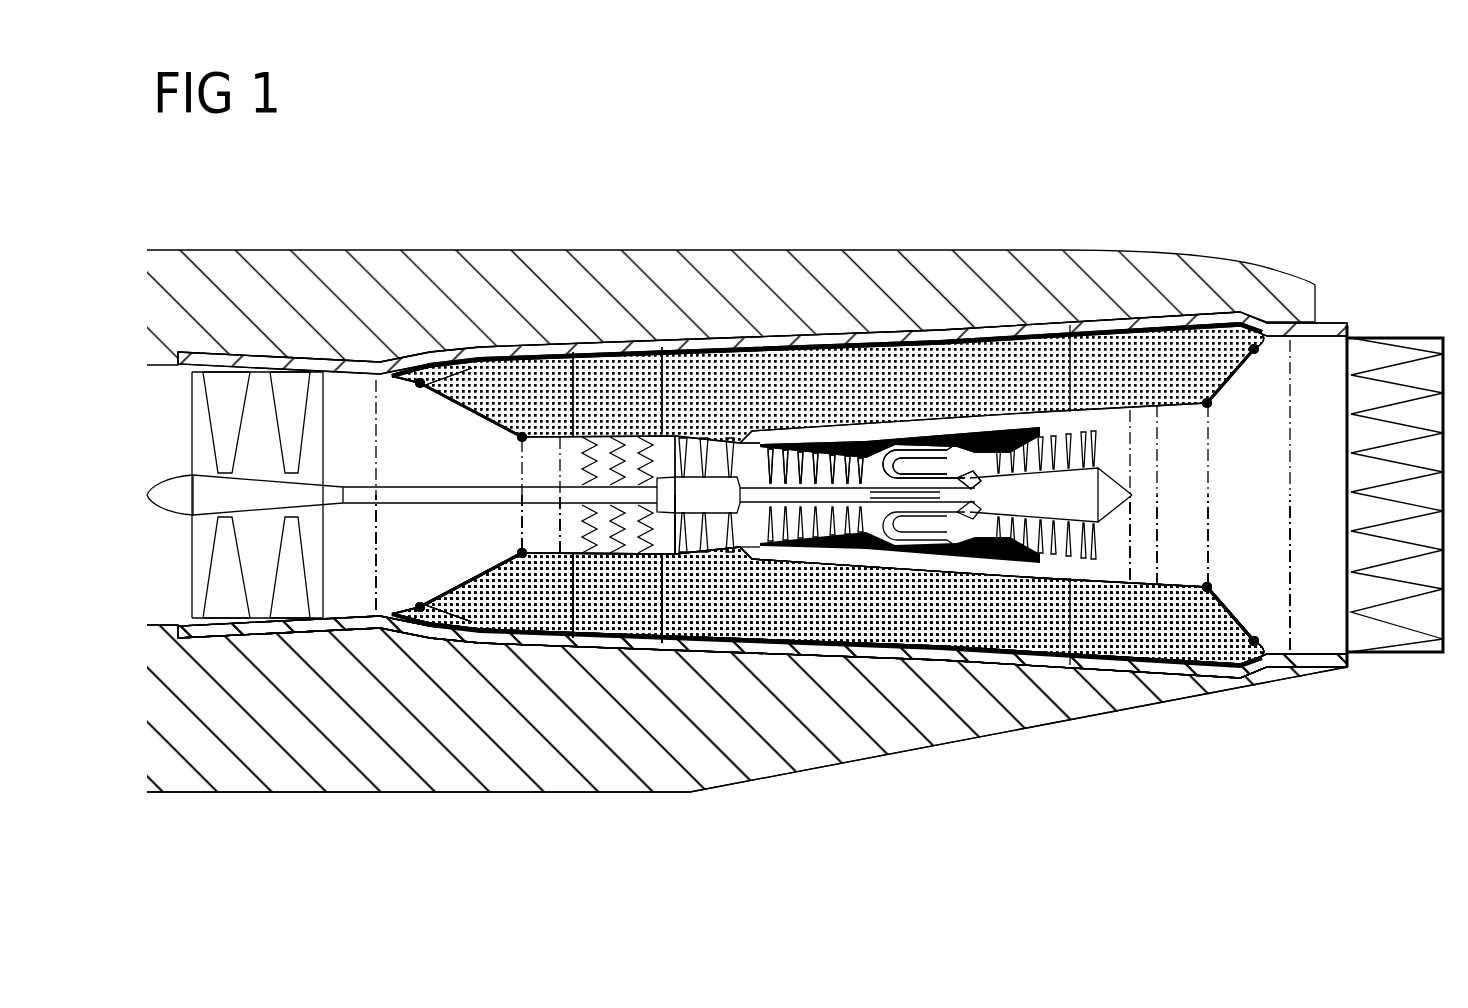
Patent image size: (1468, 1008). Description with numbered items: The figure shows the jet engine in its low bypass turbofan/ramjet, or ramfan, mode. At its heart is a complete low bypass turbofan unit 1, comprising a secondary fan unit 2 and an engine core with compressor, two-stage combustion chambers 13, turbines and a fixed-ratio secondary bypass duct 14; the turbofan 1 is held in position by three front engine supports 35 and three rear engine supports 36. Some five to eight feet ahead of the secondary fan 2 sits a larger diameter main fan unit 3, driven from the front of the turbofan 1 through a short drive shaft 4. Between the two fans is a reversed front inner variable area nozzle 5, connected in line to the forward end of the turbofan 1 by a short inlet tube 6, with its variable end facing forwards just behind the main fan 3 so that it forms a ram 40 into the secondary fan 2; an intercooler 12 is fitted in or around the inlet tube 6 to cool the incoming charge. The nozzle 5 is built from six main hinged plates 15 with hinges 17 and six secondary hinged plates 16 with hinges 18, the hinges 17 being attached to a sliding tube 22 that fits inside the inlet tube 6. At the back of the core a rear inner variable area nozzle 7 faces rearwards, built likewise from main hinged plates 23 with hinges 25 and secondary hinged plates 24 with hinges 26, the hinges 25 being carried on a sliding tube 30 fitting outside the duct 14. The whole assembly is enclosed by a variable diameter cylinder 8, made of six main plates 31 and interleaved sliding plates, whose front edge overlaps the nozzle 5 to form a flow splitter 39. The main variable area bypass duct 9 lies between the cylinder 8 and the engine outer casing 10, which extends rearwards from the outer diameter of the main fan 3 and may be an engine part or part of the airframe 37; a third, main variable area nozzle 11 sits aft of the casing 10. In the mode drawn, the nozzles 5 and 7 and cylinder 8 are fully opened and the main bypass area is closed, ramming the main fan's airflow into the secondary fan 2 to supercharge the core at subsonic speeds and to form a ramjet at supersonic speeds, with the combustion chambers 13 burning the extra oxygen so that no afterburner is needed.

The low bypass turbofan unit 1 is at (920, 463).
The secondary fan unit 2 is at (863, 670).
The main fan unit 3 is at (225, 400).
The drive shaft 4 is at (367, 497).
The front inner variable area nozzle 5 is at (323, 357).
The inlet tube 6 is at (667, 655).
The rear inner variable area nozzle 7 is at (1291, 420).
The variable diameter cylinder 8 is at (390, 377).
The main variable area bypass duct 9 is at (708, 340).
The engine outer casing 10 is at (232, 632).
The main variable area nozzle 11 is at (1397, 369).
The intercooler 12 is at (750, 660).
The two-stage combustion chambers 13 is at (1047, 487).
The secondary bypass duct 14 is at (918, 462).
The main hinged plates 15 is at (480, 647).
The secondary hinged plates 16 is at (410, 640).
The hinges 17 is at (522, 438).
The hinges 18 is at (465, 348).
The sliding tube 22 is at (547, 560).
The main hinged plates 23 is at (1222, 604).
The secondary hinged plates 24 is at (1297, 632).
The hinges 25 is at (1207, 590).
The hinges 26 is at (1255, 642).
The sliding tube 30 is at (1150, 588).
The main plates 31 is at (933, 697).
The front engine supports 35 is at (583, 340).
The rear engine supports 36 is at (1070, 330).
The airframe 37 is at (1170, 287).
The flow splitter 39 is at (375, 437).
The ram 40 is at (413, 556).